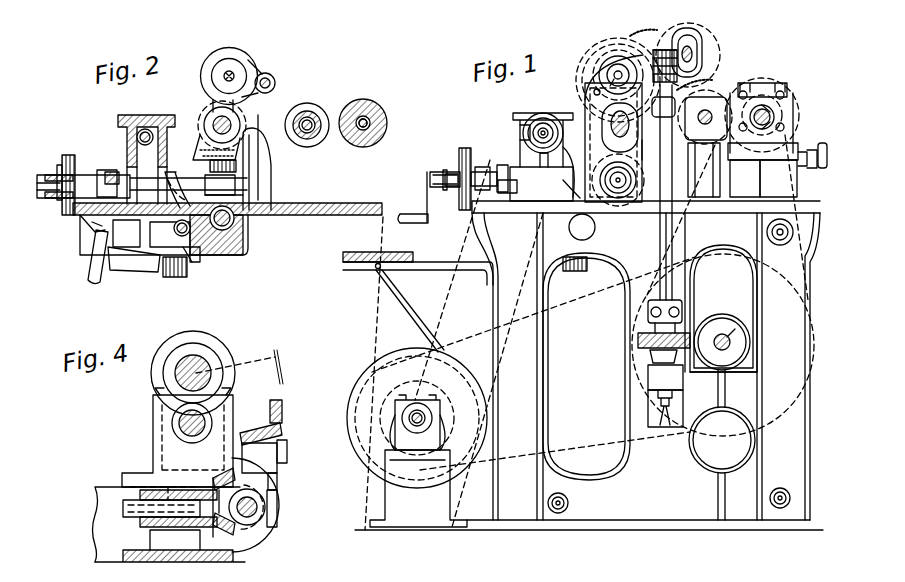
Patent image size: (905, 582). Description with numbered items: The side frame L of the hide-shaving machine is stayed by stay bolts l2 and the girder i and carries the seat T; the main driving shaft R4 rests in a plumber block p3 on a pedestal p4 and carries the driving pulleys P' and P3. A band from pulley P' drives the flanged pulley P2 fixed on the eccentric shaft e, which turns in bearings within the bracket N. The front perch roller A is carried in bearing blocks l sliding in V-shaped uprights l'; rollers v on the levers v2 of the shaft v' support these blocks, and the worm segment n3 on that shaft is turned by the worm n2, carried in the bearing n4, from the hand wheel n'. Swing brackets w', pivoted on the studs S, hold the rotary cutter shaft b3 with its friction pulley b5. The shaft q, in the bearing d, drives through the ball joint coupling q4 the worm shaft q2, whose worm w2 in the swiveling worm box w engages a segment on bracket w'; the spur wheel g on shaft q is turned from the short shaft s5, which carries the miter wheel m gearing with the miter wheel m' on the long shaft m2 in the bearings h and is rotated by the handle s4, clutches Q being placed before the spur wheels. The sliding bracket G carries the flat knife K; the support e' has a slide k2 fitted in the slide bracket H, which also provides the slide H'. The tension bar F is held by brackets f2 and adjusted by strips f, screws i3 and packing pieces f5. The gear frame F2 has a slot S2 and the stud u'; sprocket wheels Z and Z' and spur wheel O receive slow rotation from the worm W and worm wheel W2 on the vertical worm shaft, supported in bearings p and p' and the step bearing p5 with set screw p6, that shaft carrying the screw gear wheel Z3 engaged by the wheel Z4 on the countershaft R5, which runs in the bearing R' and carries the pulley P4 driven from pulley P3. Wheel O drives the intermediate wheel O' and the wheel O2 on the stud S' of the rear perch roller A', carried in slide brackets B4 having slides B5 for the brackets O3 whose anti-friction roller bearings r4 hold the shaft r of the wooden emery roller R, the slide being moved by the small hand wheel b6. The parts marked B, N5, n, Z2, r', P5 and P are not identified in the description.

In FIG. 2, the friction pulley b5 is at (236, 46).
In FIG. 2, the rotary cutter shaft b3 is at (234, 75).
In FIG. 2, the second barrel or perch roller A' is at (307, 116).
In FIG. 2, the emery roller R is at (366, 119).
In FIG. 1, the emery roller R is at (776, 109).
In FIG. 2, the emery roller shaft r is at (383, 123).
In FIG. 2, the barrel or perch roller A is at (235, 109).
In FIG. 2, the studs S is at (234, 130).
In FIG. 2, the swing brackets w' is at (222, 145).
In FIG. 2, the eccentric shaft e is at (146, 149).
In FIG. 4, the eccentric shaft e is at (172, 423).
In FIG. 2, the worm shaft q2 is at (178, 174).
In FIG. 1, the worm shaft q2 is at (504, 170).
In FIG. 2, the bearing d is at (86, 186).
In FIG. 1, the bearing d is at (484, 169).
In FIG. 2, the shaft q is at (102, 176).
In FIG. 1, the shaft q is at (444, 190).
In FIG. 2, the universal or ball joint coupling q4 is at (111, 172).
In FIG. 1, the universal or ball joint coupling q4 is at (505, 195).
In FIG. 2, the spur wheel g is at (68, 157).
In FIG. 1, the spur wheel g is at (466, 150).
In FIG. 2, the clutches Q is at (63, 198).
In FIG. 1, the clutches Q is at (450, 174).
In FIG. 2, the bracket N is at (227, 188).
In FIG. 1, the bracket N is at (541, 158).
In FIG. 2, the worm w2 is at (236, 167).
In FIG. 2, the V shaped uprights l' is at (290, 157).
In FIG. 2, the swiveling worm box w is at (249, 187).
In FIG. 2, the bearing blocks l is at (250, 203).
In FIG. 2, the roller v is at (179, 230).
In FIG. 2, the arm or lever v2 is at (210, 243).
In FIG. 2, the shaft v' is at (210, 265).
In FIG. 2, the worm segment n3 is at (190, 263).
In FIG. 2, the worm n2 is at (173, 275).
In FIG. 1, the worm n2 is at (578, 265).
In FIG. 2, the bearing n4 is at (135, 268).
In FIG. 2, the hand wheel n' is at (93, 267).
In FIG. 1, the hand wheel n' is at (433, 298).
In FIG. 2, the girder i is at (108, 235).
In FIG. 4, the sliding bracket G is at (185, 340).
In FIG. 4, the shaft B is at (200, 380).
In FIG. 4, the flat knife K is at (245, 366).
In FIG. 4, the support e' is at (177, 447).
In FIG. 4, the tension bar F is at (270, 411).
In FIG. 4, the strips f is at (289, 470).
In FIG. 4, the screws i3 is at (283, 452).
In FIG. 4, the packing pieces f5 is at (259, 458).
In FIG. 4, the brackets f2 is at (278, 488).
In FIG. 4, the miter wheel m' is at (268, 508).
In FIG. 1, the miter wheel m' is at (577, 171).
In FIG. 4, the long shaft m2 is at (252, 512).
In FIG. 4, the miter wheel m is at (224, 502).
In FIG. 1, the miter wheel m is at (569, 193).
In FIG. 4, the bearings h is at (255, 509).
In FIG. 4, the slide H' is at (152, 517).
In FIG. 4, the slide bracket H is at (170, 546).
In FIG. 4, the slide k2 is at (173, 506).
In FIG. 4, the short shaft s5 is at (161, 509).
In FIG. 1, the short shaft s5 is at (430, 179).
In FIG. 1, the side frame L is at (589, 365).
In FIG. 1, the stay bolts l2 is at (782, 240).
In FIG. 1, the seat T is at (418, 260).
In FIG. 1, the handle or lever s4 is at (413, 210).
In FIG. 1, the bearing N5 is at (527, 115).
In FIG. 1, the flanged pulley P2 is at (548, 115).
In FIG. 1, the pinion n is at (562, 102).
In FIG. 1, the housing Z2 is at (599, 142).
In FIG. 1, the sprocket wheel Z is at (618, 71).
In FIG. 1, the spur wheel O is at (618, 75).
In FIG. 1, the screw gear wheel Z3 is at (597, 90).
In FIG. 1, the slot S2 is at (620, 134).
In FIG. 1, the gear frame F2 is at (653, 150).
In FIG. 1, the stud u' is at (625, 180).
In FIG. 1, the sprocket wheel Z' is at (630, 182).
In FIG. 1, the bearing p is at (663, 192).
In FIG. 1, the worm wheel W2 is at (655, 45).
In FIG. 1, the worm W is at (665, 48).
In FIG. 1, the intermediate spur wheel O' is at (692, 55).
In FIG. 1, the pin r' is at (707, 52).
In FIG. 1, the stud S' is at (705, 117).
In FIG. 1, the slide brackets B4 is at (704, 170).
In FIG. 1, the spur wheel O2 is at (724, 93).
In FIG. 1, the anti-friction roller bearings r4 is at (781, 92).
In FIG. 1, the shaft P5 is at (774, 117).
In FIG. 1, the brackets O3 is at (763, 153).
In FIG. 1, the slides B5 is at (778, 178).
In FIG. 1, the small hand wheel b6 is at (816, 170).
In FIG. 1, the bearing p' is at (645, 316).
In FIG. 1, the step bearing p5 is at (665, 377).
In FIG. 1, the set screw adjustment p6 is at (678, 401).
In FIG. 1, the screw gear wheel Z4 is at (722, 342).
In FIG. 1, the countershaft R5 is at (732, 340).
In FIG. 1, the bearing R' is at (735, 436).
In FIG. 1, the pulley P4 is at (600, 362).
In FIG. 1, the pulley P is at (417, 418).
In FIG. 1, the driving pulley P' is at (417, 418).
In FIG. 1, the driving pulley P3 is at (445, 413).
In FIG. 1, the main driving shaft R4 is at (402, 417).
In FIG. 1, the plumber block p3 is at (417, 426).
In FIG. 1, the pedestal p4 is at (418, 488).